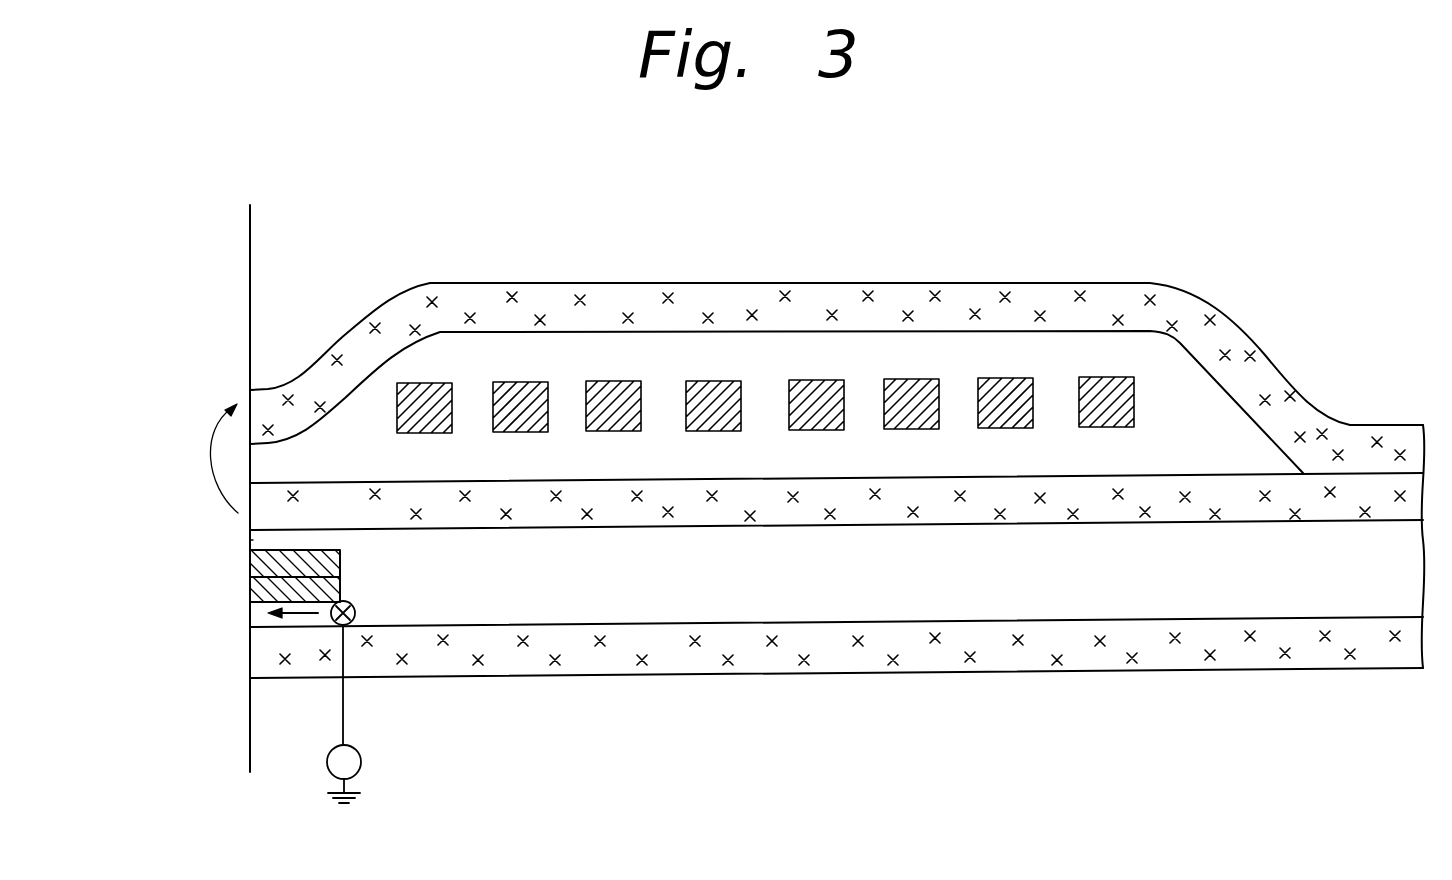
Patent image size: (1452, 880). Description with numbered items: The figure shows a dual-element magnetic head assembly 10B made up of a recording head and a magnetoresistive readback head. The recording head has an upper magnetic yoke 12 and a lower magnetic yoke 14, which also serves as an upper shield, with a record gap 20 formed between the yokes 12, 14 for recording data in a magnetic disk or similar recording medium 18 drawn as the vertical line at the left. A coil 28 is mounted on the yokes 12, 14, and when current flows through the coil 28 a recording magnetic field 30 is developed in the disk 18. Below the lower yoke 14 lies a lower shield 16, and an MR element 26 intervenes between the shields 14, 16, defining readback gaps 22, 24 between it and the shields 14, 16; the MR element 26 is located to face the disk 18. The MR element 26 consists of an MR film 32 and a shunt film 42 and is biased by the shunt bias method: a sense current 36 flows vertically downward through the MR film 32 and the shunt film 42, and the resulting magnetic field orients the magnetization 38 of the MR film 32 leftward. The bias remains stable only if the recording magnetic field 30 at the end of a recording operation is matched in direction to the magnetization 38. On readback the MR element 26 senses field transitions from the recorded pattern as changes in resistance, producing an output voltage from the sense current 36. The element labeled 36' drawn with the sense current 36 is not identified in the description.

The head assembly 10B is at (1185, 248).
The upper magnetic yoke 12 is at (763, 297).
The lower magnetic yoke 14 is at (803, 514).
The lower shield 16 is at (950, 657).
The magnetic disk 18 is at (250, 745).
The record gap 20 is at (268, 462).
The readback gap 22 is at (250, 546).
The readback gap 24 is at (262, 614).
The MR element 26 is at (368, 580).
The coil 28 is at (821, 380).
The recording magnetic field 30 is at (212, 447).
The MR film 32 is at (340, 588).
The sense current 36 is at (301, 736).
The ground terminal 36' is at (382, 750).
The magnetization 38 is at (302, 614).
The shunt film 42 is at (340, 553).